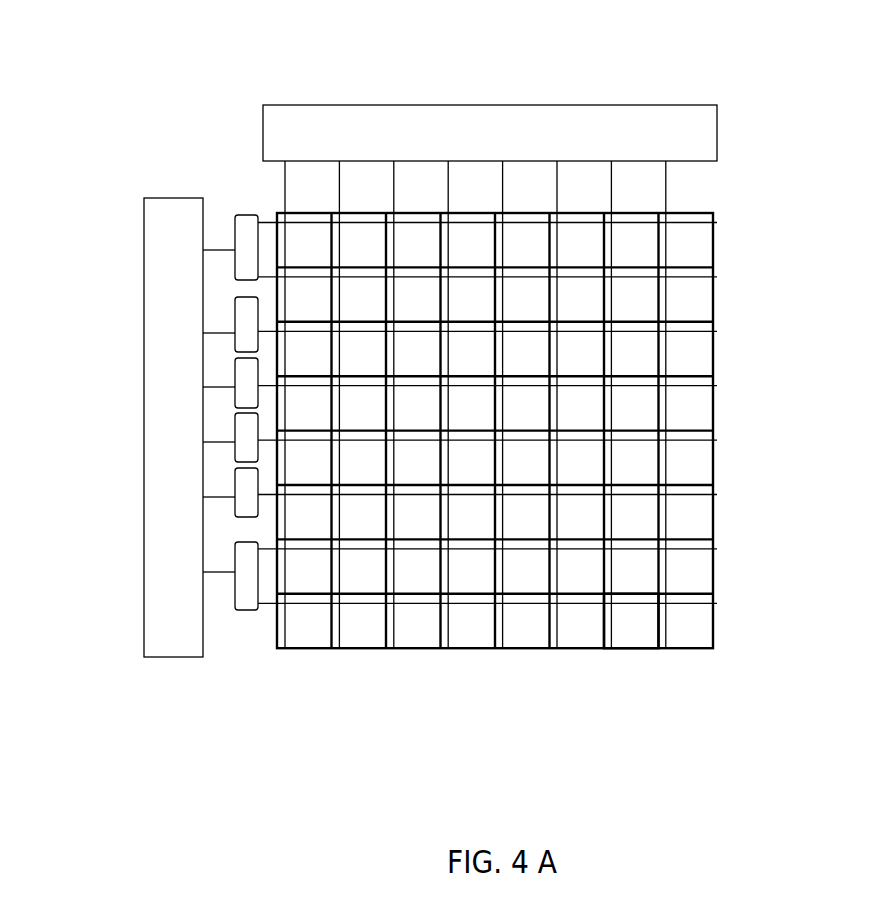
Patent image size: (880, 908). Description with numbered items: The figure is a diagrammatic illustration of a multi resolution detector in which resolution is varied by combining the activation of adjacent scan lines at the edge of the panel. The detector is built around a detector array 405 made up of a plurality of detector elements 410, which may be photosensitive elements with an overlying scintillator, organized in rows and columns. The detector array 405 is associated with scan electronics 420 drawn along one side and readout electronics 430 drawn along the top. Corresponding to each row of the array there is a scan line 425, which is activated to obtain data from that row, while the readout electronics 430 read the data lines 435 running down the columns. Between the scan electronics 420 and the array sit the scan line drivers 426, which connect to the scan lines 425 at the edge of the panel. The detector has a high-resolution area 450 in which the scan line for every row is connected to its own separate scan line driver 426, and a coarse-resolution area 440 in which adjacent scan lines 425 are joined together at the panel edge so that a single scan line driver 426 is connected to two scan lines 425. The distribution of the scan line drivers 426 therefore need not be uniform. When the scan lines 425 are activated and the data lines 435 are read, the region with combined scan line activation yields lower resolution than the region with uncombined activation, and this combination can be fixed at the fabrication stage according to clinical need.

The detector array 405 is at (708, 298).
The detector elements 410 is at (652, 230).
The scan electronics 420 is at (143, 405).
The scan line 425 is at (272, 203).
The scan line driver 426 is at (232, 668).
The readout electronics 430 is at (637, 103).
The data lines 435 is at (337, 186).
The coarse-resolution area 440 is at (640, 627).
The high-resolution area 450 is at (652, 428).